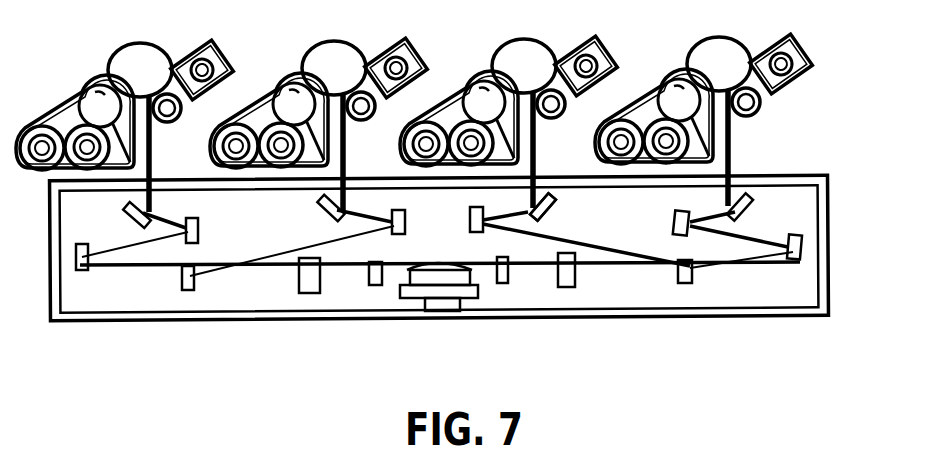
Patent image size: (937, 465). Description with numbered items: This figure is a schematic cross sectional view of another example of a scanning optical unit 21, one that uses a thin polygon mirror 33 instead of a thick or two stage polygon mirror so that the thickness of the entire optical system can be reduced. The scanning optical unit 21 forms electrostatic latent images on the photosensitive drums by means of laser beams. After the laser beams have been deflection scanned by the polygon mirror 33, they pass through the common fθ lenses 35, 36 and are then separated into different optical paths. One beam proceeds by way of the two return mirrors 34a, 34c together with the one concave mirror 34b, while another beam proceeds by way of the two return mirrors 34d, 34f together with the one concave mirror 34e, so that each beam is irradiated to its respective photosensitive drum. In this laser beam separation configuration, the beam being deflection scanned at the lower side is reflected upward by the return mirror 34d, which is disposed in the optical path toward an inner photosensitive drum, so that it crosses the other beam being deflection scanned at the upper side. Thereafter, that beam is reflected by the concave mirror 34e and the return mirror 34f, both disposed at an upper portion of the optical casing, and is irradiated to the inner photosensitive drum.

The scanning optical unit 21 is at (830, 238).
The polygon mirror 33 is at (447, 273).
The return mirror 34a is at (800, 258).
The concave mirror 34b is at (686, 212).
The return mirror 34c is at (750, 196).
The return mirror 34d is at (692, 276).
The concave mirror 34e is at (471, 212).
The return mirror 34f is at (548, 200).
The fθ lens 35 is at (503, 283).
The fθ lens 36 is at (568, 287).